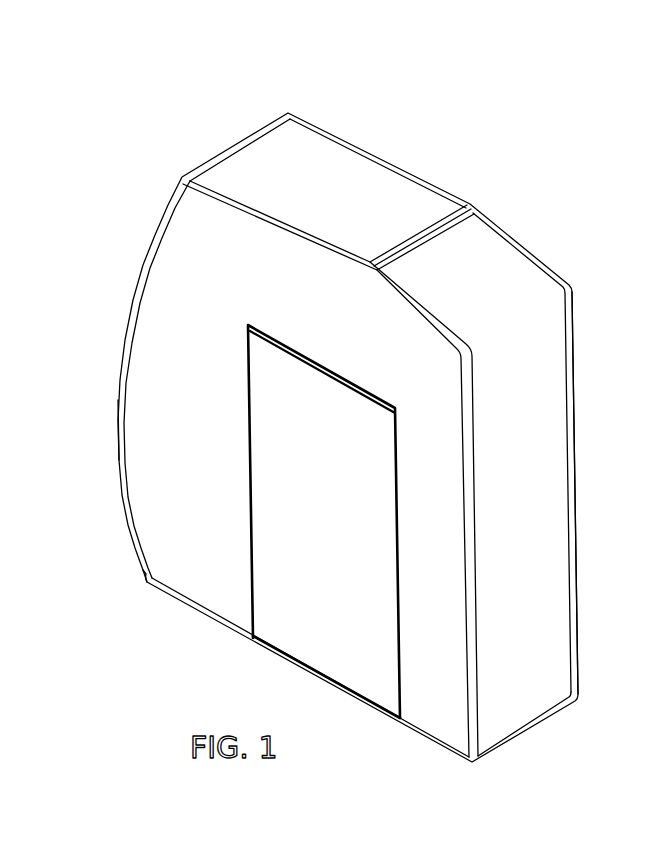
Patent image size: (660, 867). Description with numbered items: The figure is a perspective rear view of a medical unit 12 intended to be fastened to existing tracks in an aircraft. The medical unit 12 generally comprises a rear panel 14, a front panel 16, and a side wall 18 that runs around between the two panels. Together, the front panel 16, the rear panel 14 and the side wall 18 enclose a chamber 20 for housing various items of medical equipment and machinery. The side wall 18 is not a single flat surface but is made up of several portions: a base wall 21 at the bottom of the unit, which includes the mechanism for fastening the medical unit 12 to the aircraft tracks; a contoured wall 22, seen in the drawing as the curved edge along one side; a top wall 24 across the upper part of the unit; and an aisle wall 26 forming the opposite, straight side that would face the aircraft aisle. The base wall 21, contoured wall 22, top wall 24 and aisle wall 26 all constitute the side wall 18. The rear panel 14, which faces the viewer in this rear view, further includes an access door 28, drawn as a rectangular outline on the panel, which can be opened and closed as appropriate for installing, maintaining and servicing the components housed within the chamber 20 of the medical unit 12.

The medical unit 12 is at (195, 127).
The rear panel 14 is at (160, 556).
The front panel 16 is at (518, 236).
The side wall 18 is at (547, 417).
The chamber 20 is at (188, 251).
The base wall 21 is at (198, 610).
The contoured wall 22 is at (118, 440).
The top wall 24 is at (367, 167).
The aisle wall 26 is at (565, 585).
The access door 28 is at (300, 650).